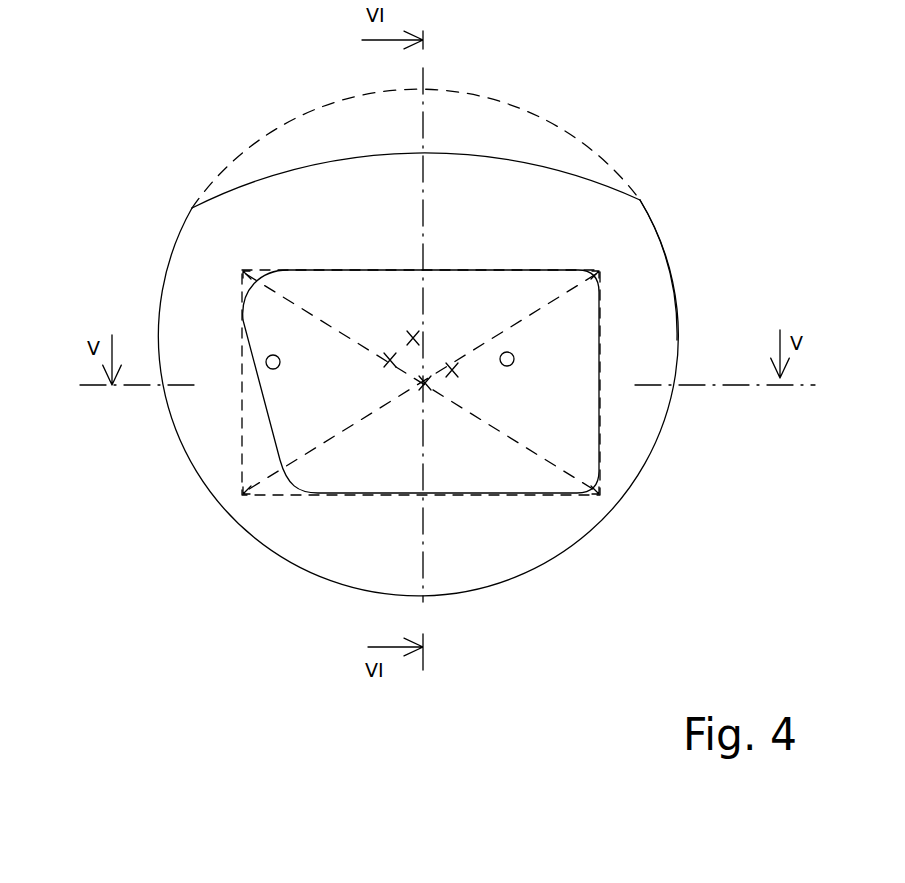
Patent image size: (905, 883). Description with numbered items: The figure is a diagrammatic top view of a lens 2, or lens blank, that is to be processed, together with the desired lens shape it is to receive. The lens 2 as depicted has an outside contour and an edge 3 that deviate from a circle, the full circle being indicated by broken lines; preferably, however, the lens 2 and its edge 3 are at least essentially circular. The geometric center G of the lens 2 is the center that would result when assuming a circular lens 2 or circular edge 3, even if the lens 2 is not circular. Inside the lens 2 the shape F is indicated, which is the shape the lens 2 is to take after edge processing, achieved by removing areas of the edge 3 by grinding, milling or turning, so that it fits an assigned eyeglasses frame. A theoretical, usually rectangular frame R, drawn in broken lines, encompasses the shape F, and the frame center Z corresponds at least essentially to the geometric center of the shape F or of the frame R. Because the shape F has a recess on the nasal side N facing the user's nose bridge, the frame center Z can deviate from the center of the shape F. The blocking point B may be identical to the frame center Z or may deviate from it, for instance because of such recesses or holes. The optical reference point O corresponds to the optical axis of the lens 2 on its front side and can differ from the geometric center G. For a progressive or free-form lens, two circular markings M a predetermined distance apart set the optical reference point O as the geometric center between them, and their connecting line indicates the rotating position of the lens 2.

The lens 2 is at (673, 224).
The edge 3 is at (675, 293).
The markings M is at (266, 361).
The nasal side N is at (257, 388).
The frame R is at (242, 425).
The shape F is at (248, 463).
The geometric center G is at (413, 338).
The optical reference point O is at (390, 360).
The frame center Z is at (425, 383).
The blocking point B is at (452, 370).